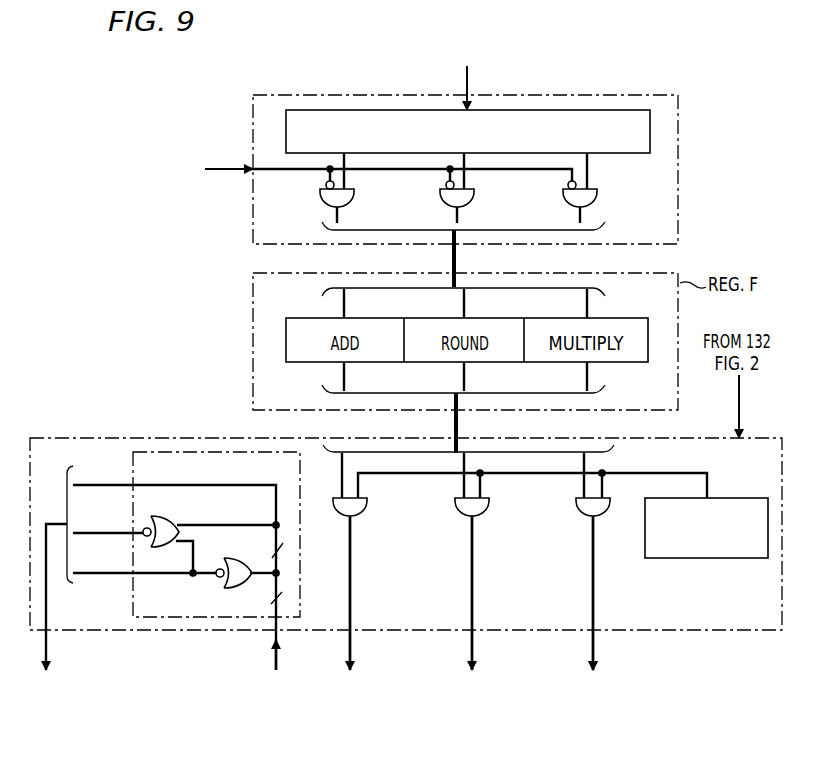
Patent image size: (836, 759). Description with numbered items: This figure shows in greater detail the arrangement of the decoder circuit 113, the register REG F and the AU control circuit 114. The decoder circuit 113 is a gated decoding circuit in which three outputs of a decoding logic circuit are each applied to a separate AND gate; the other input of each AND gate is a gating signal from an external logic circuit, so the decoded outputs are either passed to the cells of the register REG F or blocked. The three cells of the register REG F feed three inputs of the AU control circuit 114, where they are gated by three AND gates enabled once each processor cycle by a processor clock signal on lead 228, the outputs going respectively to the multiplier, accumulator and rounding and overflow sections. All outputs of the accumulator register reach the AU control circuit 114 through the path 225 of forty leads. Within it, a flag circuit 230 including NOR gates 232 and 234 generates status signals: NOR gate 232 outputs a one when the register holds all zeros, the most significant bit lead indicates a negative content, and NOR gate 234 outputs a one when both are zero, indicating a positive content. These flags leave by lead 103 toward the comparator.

The decoder circuit 113 is at (679, 104).
The AU control circuit 114 is at (95, 438).
The lead 228 is at (651, 474).
The flag circuit 230 is at (300, 583).
The NOR gate 232 is at (222, 591).
The NOR gate 234 is at (150, 538).
The lead 103 is at (49, 651).
The path 225 is at (274, 655).